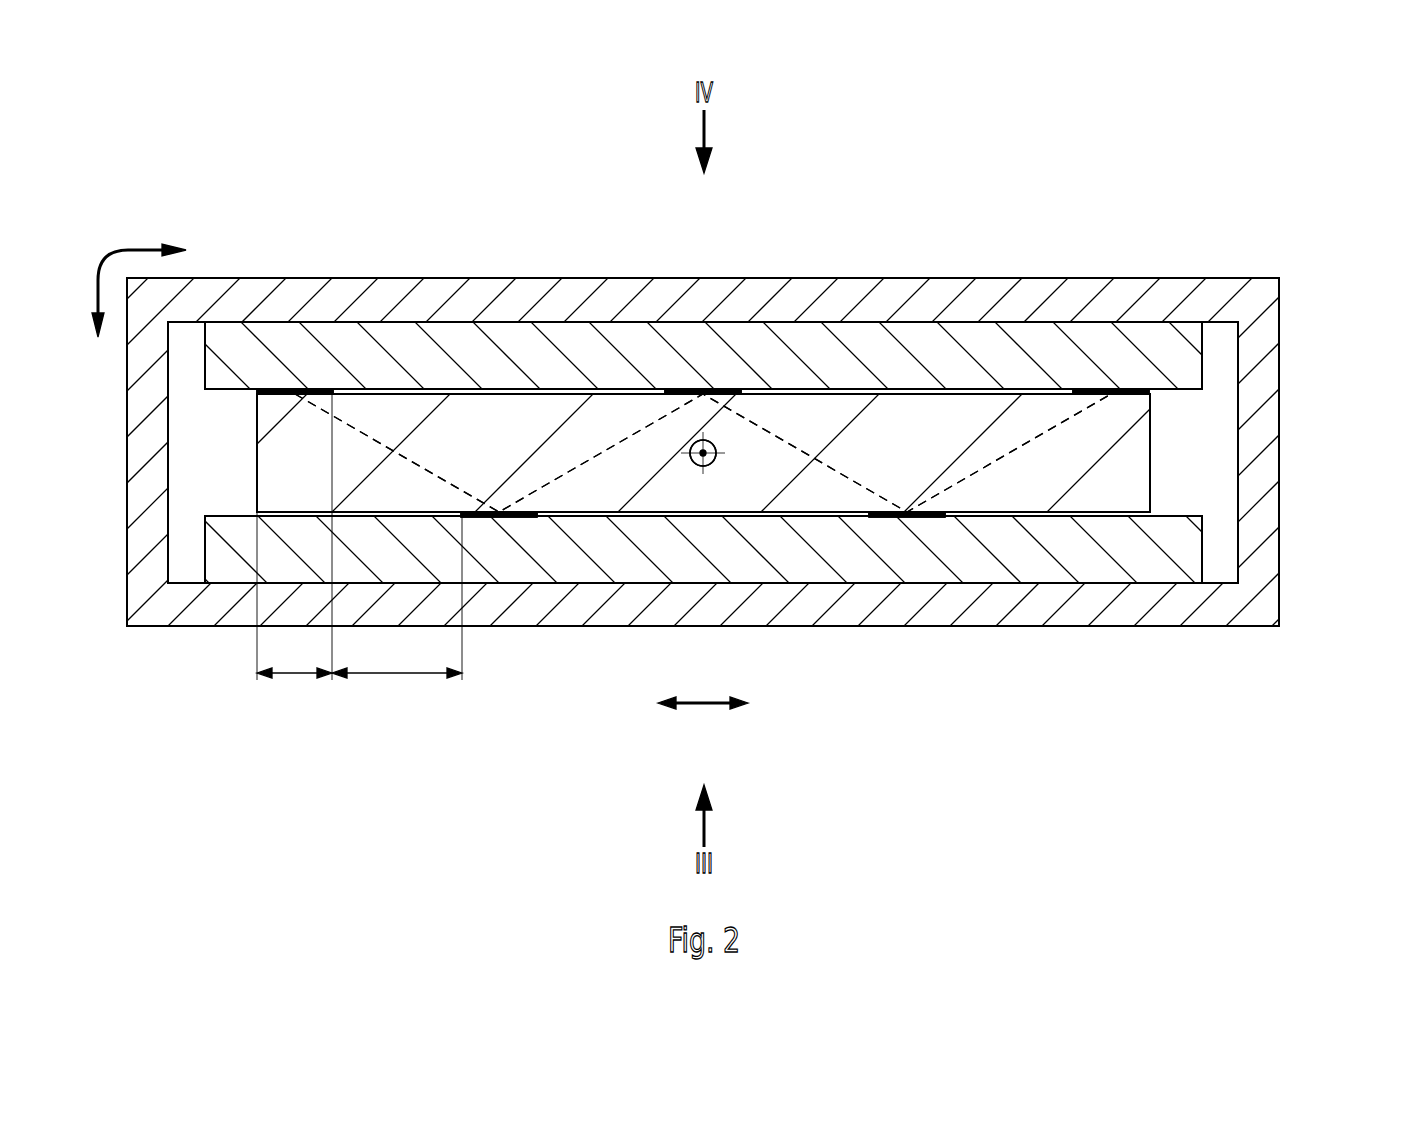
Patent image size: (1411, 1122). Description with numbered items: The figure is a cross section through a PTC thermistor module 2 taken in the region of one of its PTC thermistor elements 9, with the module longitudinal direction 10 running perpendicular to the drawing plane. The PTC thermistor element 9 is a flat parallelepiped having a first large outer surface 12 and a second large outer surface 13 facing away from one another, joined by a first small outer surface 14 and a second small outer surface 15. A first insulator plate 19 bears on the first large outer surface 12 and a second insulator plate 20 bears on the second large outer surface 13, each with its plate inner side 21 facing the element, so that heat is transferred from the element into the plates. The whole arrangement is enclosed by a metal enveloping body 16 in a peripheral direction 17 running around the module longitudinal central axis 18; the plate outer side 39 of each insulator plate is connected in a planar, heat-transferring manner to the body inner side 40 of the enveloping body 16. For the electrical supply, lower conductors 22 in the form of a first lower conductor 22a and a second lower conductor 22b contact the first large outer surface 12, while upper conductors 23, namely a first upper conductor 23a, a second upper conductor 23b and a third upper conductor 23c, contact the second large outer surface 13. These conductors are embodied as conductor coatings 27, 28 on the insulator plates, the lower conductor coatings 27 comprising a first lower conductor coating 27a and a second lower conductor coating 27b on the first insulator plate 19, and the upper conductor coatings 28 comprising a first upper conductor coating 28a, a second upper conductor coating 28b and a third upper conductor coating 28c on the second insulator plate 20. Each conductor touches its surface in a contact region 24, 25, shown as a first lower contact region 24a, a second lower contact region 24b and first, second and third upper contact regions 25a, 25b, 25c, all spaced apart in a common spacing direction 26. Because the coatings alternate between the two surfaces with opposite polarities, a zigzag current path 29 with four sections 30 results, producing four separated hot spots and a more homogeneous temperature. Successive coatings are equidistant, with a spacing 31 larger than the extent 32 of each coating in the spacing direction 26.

The PTC thermistor module 2 is at (1294, 185).
The PTC thermistor element 9 is at (1162, 420).
The module longitudinal direction 10 is at (690, 455).
The first large outer surface 12 is at (710, 517).
The second large outer surface 13 is at (912, 388).
The first small outer surface 14 is at (250, 452).
The second small outer surface 15 is at (1153, 450).
The enveloping body 16 is at (1290, 298).
The peripheral direction 17 is at (98, 252).
The module longitudinal central axis 18 is at (717, 453).
The first insulator plate 19 is at (1212, 547).
The second insulator plate 20 is at (1212, 352).
The plate inner side 21 is at (962, 398).
The first electrical conductor 22 is at (753, 610).
The first lower conductor 22a is at (500, 517).
The second lower conductor 22b is at (907, 517).
The upper electrical conductor 23 is at (749, 292).
The first upper conductor 23a is at (295, 389).
The second upper conductor 23b is at (708, 393).
The third upper conductor 23c is at (1105, 393).
The contact region 24 is at (734, 587).
The first lower contact region 24a is at (535, 520).
The second lower contact region 24b is at (965, 502).
The contact region 25 is at (727, 312).
The first upper contact region 25a is at (335, 394).
The second upper contact region 25b is at (740, 393).
The third upper contact region 25c is at (1147, 394).
The spacing direction 26 is at (703, 710).
The lower conductor coating 27 is at (703, 514).
The first lower conductor coating 27a is at (499, 514).
The second lower conductor coating 27b is at (907, 514).
The upper conductor coating 28 is at (703, 391).
The first upper conductor coating 28a is at (295, 391).
The second upper conductor coating 28b is at (703, 391).
The third upper conductor coating 28c is at (1111, 391).
The current path 29 is at (1032, 459).
The section of the current path 30 is at (443, 475).
The spacing 31 is at (393, 676).
The extent 32 is at (292, 676).
The plate outer side 39 is at (510, 312).
The body inner side 40 is at (550, 325).